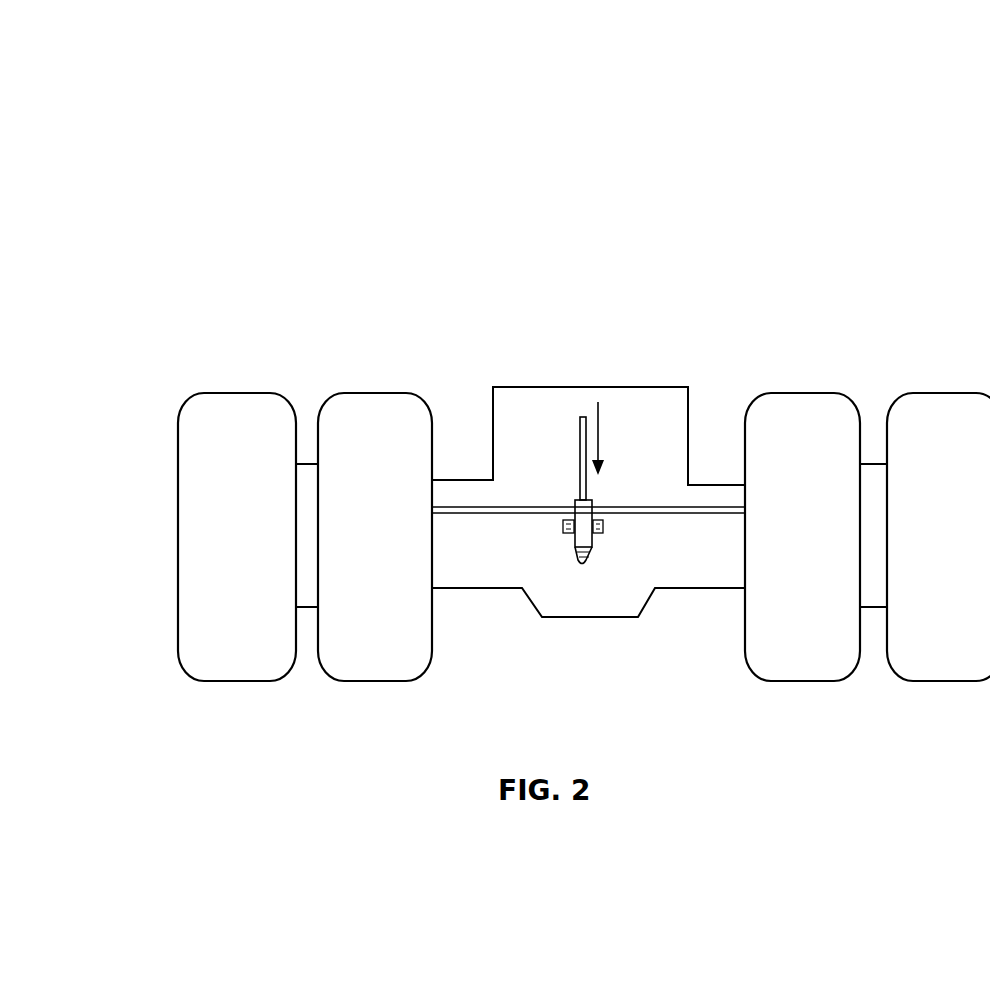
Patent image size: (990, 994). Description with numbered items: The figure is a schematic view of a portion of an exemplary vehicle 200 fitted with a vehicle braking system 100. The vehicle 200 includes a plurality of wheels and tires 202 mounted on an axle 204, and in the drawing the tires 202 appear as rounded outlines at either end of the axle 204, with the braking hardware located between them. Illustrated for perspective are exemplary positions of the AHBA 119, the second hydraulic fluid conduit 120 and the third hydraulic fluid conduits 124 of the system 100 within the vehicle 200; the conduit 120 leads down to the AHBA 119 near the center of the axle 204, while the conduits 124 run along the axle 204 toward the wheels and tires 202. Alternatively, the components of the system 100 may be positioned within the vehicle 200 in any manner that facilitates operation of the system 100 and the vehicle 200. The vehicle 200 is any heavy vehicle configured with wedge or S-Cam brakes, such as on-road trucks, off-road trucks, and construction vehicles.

The vehicle 200 is at (224, 94).
The vehicle braking system 100 is at (588, 312).
The wheels and tires 202 is at (362, 400).
The axle 204 is at (475, 592).
The third hydraulic fluid conduits 124 is at (478, 498).
The second hydraulic fluid conduit 120 is at (583, 422).
The AHBA 119 is at (582, 565).